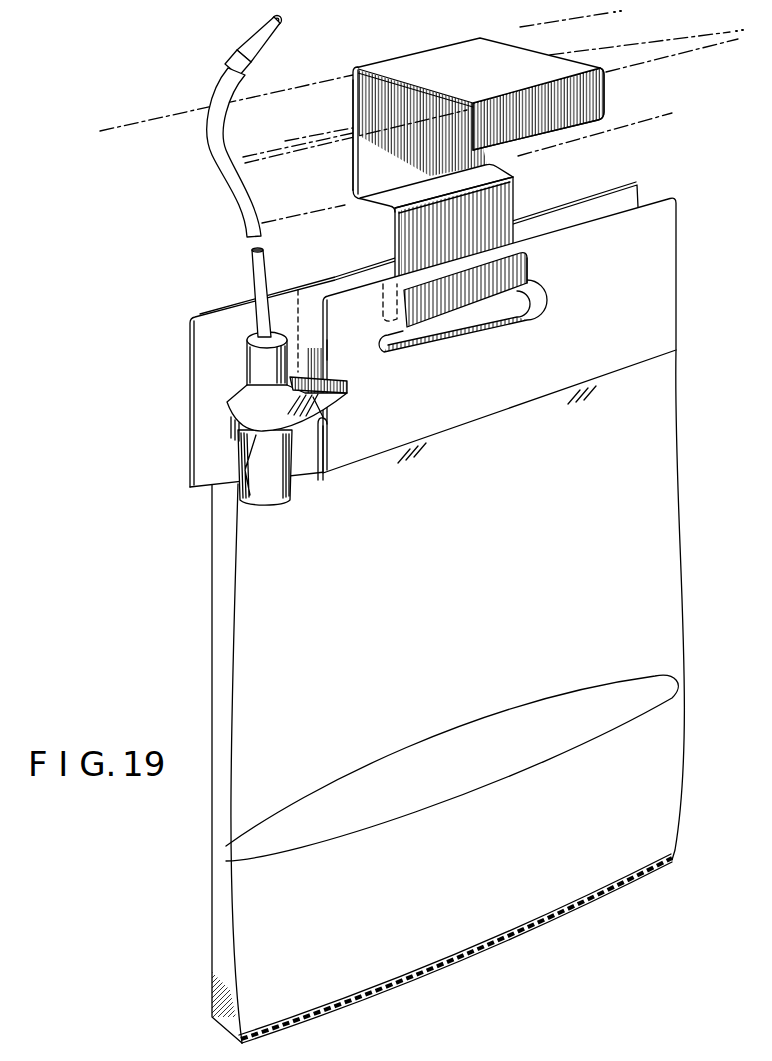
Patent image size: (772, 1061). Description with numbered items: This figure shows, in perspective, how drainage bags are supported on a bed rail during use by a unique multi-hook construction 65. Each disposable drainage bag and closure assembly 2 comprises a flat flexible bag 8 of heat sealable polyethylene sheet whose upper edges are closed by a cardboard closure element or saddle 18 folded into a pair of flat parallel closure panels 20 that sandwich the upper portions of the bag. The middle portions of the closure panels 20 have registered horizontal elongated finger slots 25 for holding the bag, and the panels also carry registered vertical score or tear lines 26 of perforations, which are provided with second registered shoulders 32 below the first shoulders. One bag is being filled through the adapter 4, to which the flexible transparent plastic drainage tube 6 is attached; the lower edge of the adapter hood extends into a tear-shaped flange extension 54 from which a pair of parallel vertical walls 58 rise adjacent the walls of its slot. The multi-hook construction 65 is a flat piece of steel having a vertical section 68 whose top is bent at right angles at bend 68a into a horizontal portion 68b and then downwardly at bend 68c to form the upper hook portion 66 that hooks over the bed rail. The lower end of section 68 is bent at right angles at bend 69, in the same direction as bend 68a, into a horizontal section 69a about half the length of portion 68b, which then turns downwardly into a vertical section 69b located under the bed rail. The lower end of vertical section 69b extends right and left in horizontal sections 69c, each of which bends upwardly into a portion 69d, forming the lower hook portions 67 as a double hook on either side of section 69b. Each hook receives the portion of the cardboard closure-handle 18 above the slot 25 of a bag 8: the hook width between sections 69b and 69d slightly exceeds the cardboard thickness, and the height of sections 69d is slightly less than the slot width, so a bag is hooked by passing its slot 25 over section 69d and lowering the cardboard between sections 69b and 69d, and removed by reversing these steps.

The disposable drainage bag and closure assembly 2 is at (640, 181).
The adapter 4 is at (239, 406).
The drainage tube 6 is at (230, 189).
The flat flexible bag 8 is at (264, 587).
The closure element or saddle 18 is at (664, 300).
The closure panels 20 is at (667, 260).
The finger slots 25 is at (546, 309).
The score or tear lines 26 is at (327, 347).
The second registered shoulders 32 is at (324, 425).
The flange extension 54 is at (320, 392).
The vertical walls 58 is at (328, 413).
The multi-hook construction 65 is at (426, 46).
The upper hook portion 66 is at (400, 145).
The lower hook portions 67 is at (536, 267).
The vertical section 68 is at (353, 96).
The bend 68a is at (353, 66).
The horizontal portion 68b is at (527, 27).
The bend 68c is at (673, 107).
The bend 69 is at (354, 201).
The horizontal section 69a is at (378, 209).
The vertical section 69b is at (450, 242).
The horizontal sections 69c is at (381, 324).
The upturned portions 69d is at (599, 289).